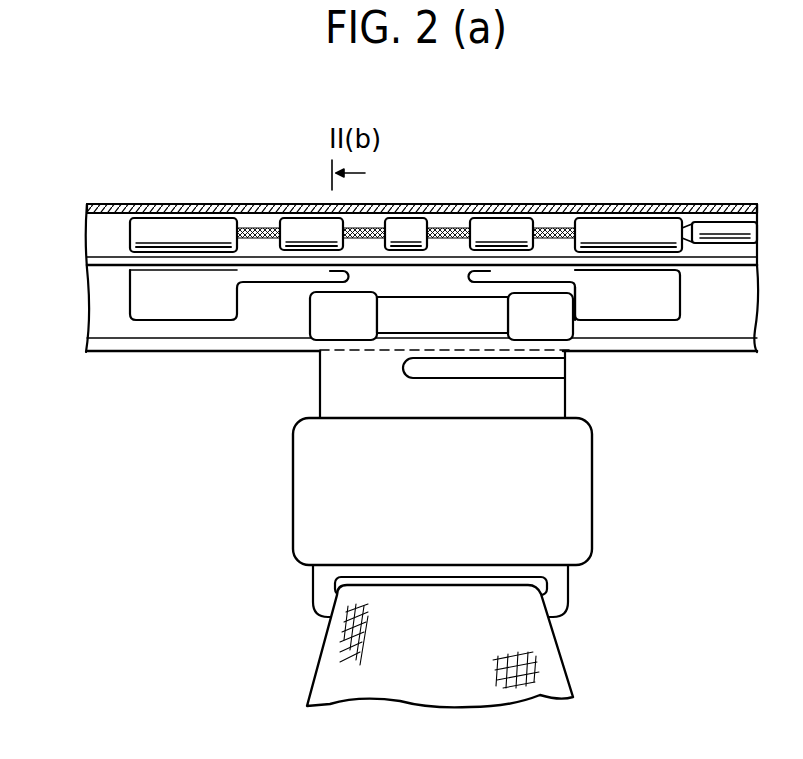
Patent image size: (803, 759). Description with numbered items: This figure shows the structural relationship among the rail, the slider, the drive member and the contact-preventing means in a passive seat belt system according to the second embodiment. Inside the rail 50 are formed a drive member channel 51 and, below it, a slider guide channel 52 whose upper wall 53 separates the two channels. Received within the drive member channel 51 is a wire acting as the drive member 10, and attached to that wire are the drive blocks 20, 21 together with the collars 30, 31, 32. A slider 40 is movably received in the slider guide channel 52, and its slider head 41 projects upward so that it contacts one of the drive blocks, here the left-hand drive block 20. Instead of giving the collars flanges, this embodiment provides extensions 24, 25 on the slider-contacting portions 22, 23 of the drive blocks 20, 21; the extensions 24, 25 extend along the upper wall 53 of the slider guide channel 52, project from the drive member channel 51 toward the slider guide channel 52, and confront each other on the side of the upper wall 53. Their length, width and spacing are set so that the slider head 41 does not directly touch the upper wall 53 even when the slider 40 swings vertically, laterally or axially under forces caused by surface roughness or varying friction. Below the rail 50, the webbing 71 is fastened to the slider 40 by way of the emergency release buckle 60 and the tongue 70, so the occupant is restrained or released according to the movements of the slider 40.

The drive member 10 is at (570, 213).
The drive block 20 is at (153, 233).
The drive block 21 is at (638, 233).
The slider-contacting portion 22 is at (250, 288).
The slider-contacting portion 23 is at (576, 297).
The extension 24 is at (260, 275).
The extension 25 is at (512, 280).
The collar 30 is at (303, 235).
The collar 31 is at (402, 233).
The collar 32 is at (493, 233).
The slider 40 is at (555, 400).
The slider head 41 is at (493, 318).
The rail 50 is at (730, 325).
The drive member channel 51 is at (97, 235).
The slider guide channel 52 is at (97, 328).
The upper wall 53 is at (97, 293).
The emergency release buckle 60 is at (583, 505).
The tongue 70 is at (567, 588).
The webbing 71 is at (543, 640).